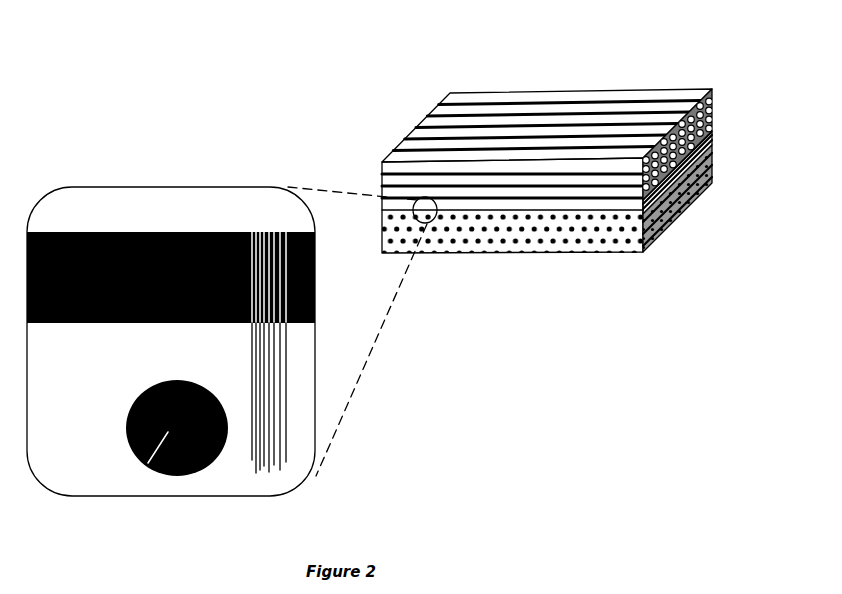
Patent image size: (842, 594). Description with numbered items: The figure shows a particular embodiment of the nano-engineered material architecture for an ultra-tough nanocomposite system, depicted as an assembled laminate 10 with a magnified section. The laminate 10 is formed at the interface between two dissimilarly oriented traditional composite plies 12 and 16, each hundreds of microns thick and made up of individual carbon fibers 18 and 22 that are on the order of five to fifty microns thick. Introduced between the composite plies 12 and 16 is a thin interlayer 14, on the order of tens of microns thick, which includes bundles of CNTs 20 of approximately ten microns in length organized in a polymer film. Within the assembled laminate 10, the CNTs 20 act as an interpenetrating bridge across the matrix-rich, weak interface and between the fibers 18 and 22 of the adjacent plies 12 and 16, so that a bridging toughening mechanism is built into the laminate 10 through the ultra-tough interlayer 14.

The hybrid nanocomposite system 10 is at (595, 136).
The traditional composite ply 12 is at (595, 186).
The interlayer 14 is at (595, 149).
The traditional composite ply 16 is at (595, 129).
The carbon fibers 18 is at (227, 225).
The bundles of CNTs 20 is at (361, 356).
The carbon fibers 22 is at (235, 356).